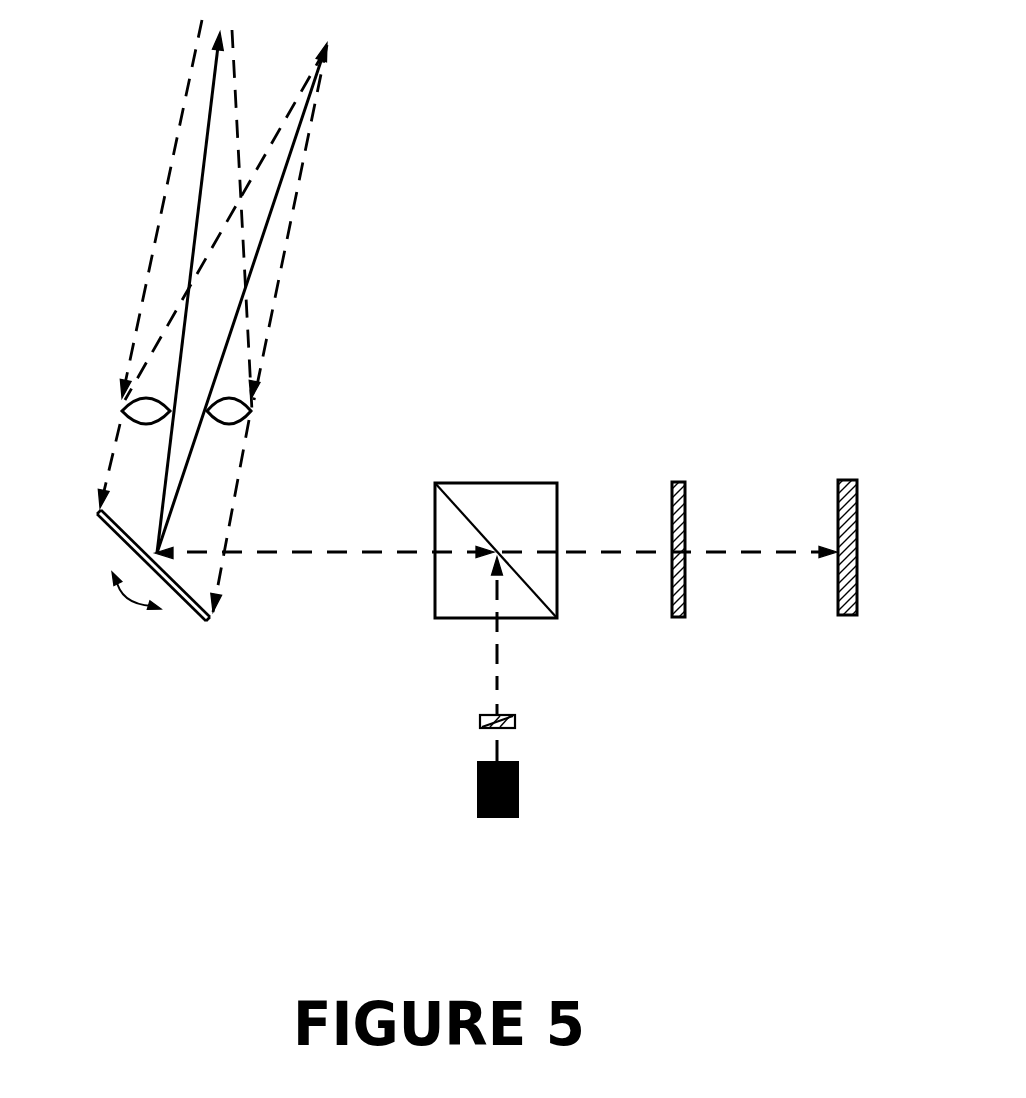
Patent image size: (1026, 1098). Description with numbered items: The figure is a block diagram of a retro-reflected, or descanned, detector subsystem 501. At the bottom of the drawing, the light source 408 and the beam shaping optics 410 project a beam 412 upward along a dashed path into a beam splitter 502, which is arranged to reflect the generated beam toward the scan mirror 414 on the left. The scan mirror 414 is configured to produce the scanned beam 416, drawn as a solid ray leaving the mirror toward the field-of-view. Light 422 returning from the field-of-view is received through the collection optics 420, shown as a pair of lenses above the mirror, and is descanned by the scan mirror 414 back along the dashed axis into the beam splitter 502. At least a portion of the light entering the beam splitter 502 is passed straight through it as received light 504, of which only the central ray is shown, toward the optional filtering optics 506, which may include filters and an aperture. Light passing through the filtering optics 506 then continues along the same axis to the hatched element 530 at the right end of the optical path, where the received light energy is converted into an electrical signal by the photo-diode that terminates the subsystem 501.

The light source 408 is at (518, 768).
The beam shaping optics 410 is at (515, 719).
The light beam 412 is at (497, 682).
The scan mirror 414 is at (110, 530).
The scanned beam 416 is at (197, 201).
The collection optics 420 is at (121, 432).
The light 422 is at (290, 228).
The retro-reflected (descanned) detector subsystem 501 is at (282, 692).
The beam splitter 502 is at (572, 465).
The received light 504 is at (592, 549).
The filtering optics 506 is at (686, 508).
The detector 530 is at (857, 488).